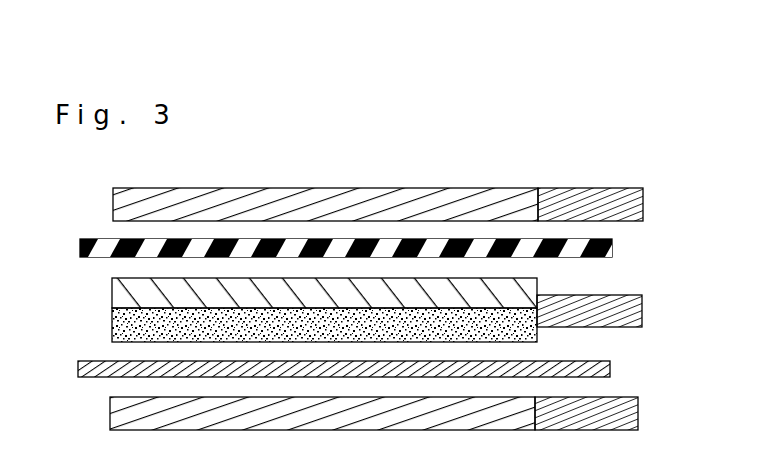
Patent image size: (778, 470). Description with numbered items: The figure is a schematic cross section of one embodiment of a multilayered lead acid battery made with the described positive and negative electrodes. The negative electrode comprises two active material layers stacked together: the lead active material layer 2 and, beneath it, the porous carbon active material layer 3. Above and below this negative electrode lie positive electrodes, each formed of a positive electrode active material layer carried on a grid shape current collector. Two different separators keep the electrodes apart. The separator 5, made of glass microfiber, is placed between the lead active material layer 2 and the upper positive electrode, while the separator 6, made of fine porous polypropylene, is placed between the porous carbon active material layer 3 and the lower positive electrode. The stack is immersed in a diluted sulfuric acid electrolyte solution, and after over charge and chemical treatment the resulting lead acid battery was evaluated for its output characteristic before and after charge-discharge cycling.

The lead active material layer 2 is at (112, 290).
The porous carbon active material layer 3 is at (112, 326).
The separator made by glass microfiber 5 is at (82, 243).
The separator made by the fine porous polypropylene 6 is at (80, 367).